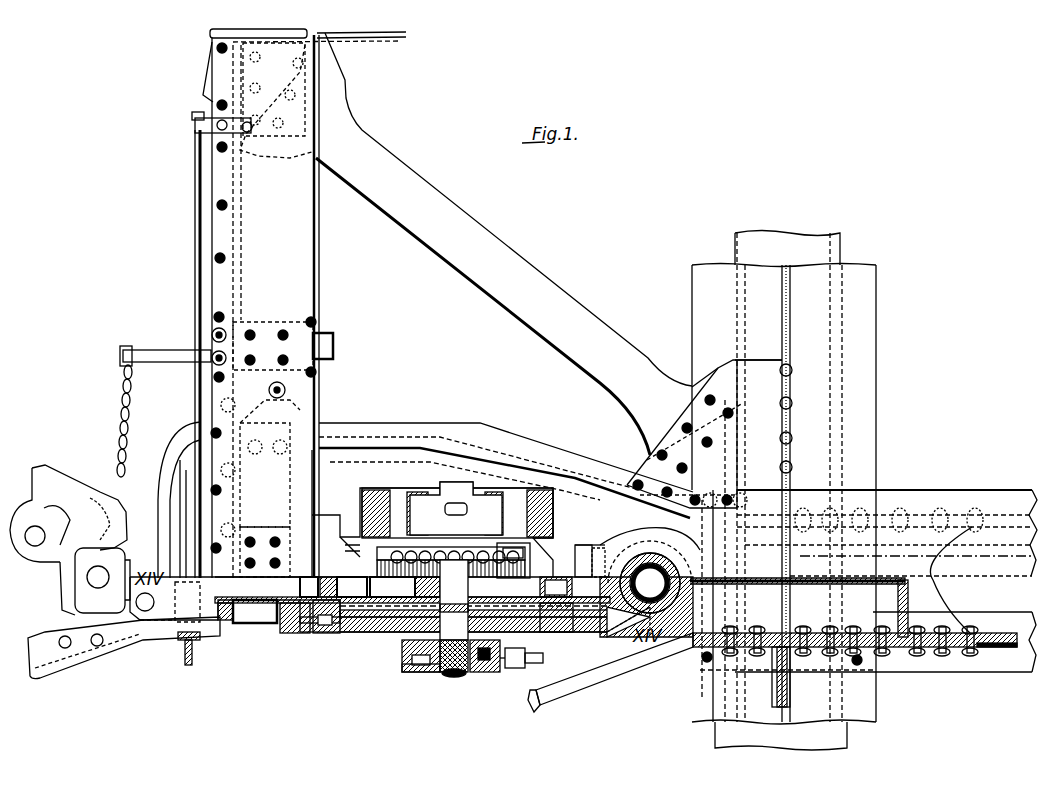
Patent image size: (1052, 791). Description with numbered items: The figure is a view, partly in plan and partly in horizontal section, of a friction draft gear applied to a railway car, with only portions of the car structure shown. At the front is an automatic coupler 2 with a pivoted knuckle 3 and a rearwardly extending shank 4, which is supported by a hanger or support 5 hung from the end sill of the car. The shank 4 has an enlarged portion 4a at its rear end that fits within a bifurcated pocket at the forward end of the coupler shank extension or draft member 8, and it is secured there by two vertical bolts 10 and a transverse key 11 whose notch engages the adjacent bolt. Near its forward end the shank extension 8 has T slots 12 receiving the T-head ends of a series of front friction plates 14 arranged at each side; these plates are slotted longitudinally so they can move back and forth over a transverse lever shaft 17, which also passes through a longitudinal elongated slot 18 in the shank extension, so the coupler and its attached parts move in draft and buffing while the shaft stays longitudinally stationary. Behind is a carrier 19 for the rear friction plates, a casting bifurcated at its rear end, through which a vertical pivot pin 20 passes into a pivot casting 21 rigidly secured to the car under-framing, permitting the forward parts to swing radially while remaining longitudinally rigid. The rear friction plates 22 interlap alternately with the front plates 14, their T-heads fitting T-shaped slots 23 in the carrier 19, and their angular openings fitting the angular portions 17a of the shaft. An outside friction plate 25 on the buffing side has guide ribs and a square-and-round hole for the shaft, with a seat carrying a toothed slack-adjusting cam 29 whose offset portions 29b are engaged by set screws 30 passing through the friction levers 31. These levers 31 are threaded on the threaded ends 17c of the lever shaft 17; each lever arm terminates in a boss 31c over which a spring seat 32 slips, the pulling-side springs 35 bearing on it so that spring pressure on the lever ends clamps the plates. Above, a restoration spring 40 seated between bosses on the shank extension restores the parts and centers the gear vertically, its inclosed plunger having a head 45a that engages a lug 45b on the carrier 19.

The coupler 2 is at (72, 586).
The pivoted knuckle 3 is at (66, 540).
The coupler shank 4 is at (185, 630).
The enlarged portion of the coupler shank 4a is at (300, 600).
The hanger or support 5 is at (193, 648).
The coupler shank extension or draft member 8 is at (338, 580).
The vertical bolts 10 is at (285, 580).
The transverse key 11 is at (256, 622).
The T slots 12 is at (324, 634).
The front friction plates 14 is at (350, 530).
The lever shaft 17 is at (462, 597).
The angular portions of the lever shaft 17a is at (457, 618).
The threaded ends of the lever shaft 17c is at (455, 676).
The longitudinal elongated slot 18 is at (405, 586).
The carrier for the rear friction plates 19 is at (640, 642).
The pivot pin 20 is at (655, 565).
The pivot casting 21 is at (693, 640).
The rear friction plates 22 is at (556, 587).
The T-shaped slots 23 is at (612, 630).
The outside friction plate 25 is at (560, 625).
The slack-adjusting cam 29 is at (402, 650).
The offset portions of the slack-adjusters 29b is at (405, 666).
The set screws 30 is at (543, 658).
The friction levers 31 is at (432, 672).
The boss 31c is at (462, 503).
The spring seat 32 is at (440, 495).
The springs 35 is at (400, 497).
The restoration spring 40 is at (452, 553).
The head of the plunger 45a is at (645, 540).
The lug 45b is at (588, 547).